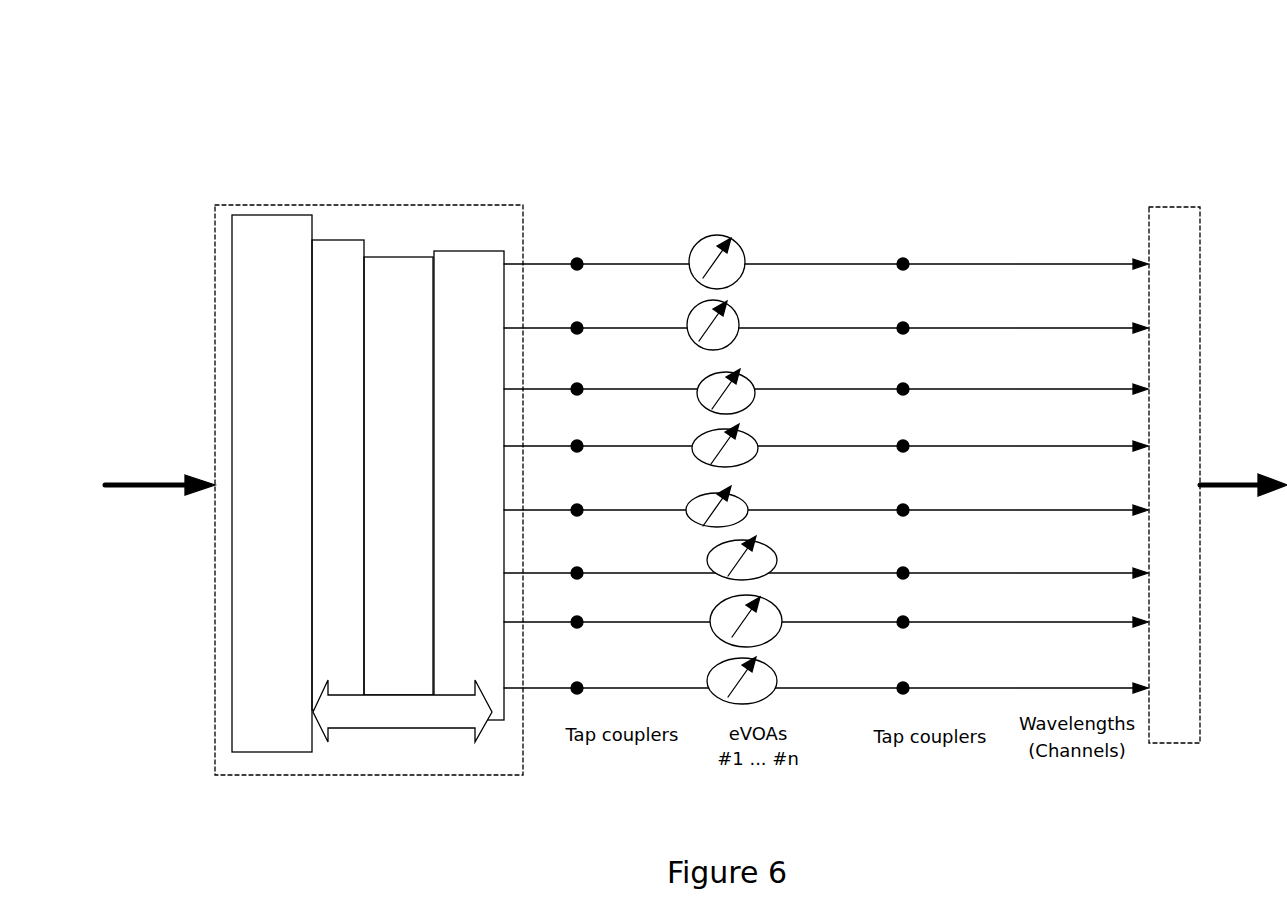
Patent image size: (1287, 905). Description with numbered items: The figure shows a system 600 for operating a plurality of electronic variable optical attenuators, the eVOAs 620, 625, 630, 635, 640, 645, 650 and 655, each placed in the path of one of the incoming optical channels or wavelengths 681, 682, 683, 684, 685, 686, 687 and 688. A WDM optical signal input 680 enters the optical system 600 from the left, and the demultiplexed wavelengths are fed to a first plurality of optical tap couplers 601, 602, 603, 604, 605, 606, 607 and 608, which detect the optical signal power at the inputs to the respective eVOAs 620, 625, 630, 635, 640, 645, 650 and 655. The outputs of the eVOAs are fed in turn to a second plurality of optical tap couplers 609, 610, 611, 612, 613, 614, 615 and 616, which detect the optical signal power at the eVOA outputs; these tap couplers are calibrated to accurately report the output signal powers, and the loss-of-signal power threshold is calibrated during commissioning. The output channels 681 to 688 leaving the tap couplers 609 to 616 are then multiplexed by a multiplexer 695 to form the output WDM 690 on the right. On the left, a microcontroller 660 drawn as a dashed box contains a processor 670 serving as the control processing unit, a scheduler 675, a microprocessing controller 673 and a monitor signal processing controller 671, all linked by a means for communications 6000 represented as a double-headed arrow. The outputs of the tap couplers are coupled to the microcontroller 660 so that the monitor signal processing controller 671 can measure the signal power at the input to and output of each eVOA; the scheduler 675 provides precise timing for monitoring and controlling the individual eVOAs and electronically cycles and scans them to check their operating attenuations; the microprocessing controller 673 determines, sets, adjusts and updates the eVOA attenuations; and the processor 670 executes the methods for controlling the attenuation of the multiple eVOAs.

The system 600 is at (276, 82).
The microcontroller 660 is at (346, 205).
The processor 670 is at (272, 483).
The scheduler 675 is at (338, 475).
The microprocessing controller 673 is at (398, 476).
The monitor signal processing controller 671 is at (469, 485).
The means for communications 6000 is at (402, 711).
The WDM optical signal input 680 is at (160, 473).
The output WDM 690 is at (1243, 479).
The multiplexer 695 is at (1163, 207).
The optical tap coupler 601 is at (667, 262).
The optical tap coupler 602 is at (667, 326).
The optical tap coupler 603 is at (667, 387).
The optical tap coupler 604 is at (667, 444).
The optical tap coupler 605 is at (668, 508).
The optical tap coupler 606 is at (668, 571).
The optical tap coupler 607 is at (668, 620).
The optical tap coupler 608 is at (670, 686).
The optical tap coupler 609 is at (913, 264).
The optical tap coupler 610 is at (913, 328).
The optical tap coupler 611 is at (913, 389).
The optical tap coupler 612 is at (913, 446).
The optical tap coupler 613 is at (913, 510).
The optical tap coupler 614 is at (913, 573).
The optical tap coupler 615 is at (913, 622).
The optical tap coupler 616 is at (913, 688).
The eVOA 620 is at (738, 242).
The eVOA 625 is at (736, 310).
The eVOA 630 is at (746, 378).
The eVOA 635 is at (748, 433).
The eVOA 640 is at (742, 496).
The eVOA 645 is at (760, 545).
The eVOA 650 is at (760, 600).
The eVOA 655 is at (770, 664).
The channel (wavelength) 681 is at (1121, 262).
The channel (wavelength) 682 is at (1121, 326).
The channel (wavelength) 683 is at (1120, 387).
The channel (wavelength) 684 is at (1120, 444).
The channel (wavelength) 685 is at (1118, 508).
The channel (wavelength) 686 is at (1112, 571).
The channel (wavelength) 687 is at (1112, 620).
The channel (wavelength) 688 is at (1112, 686).